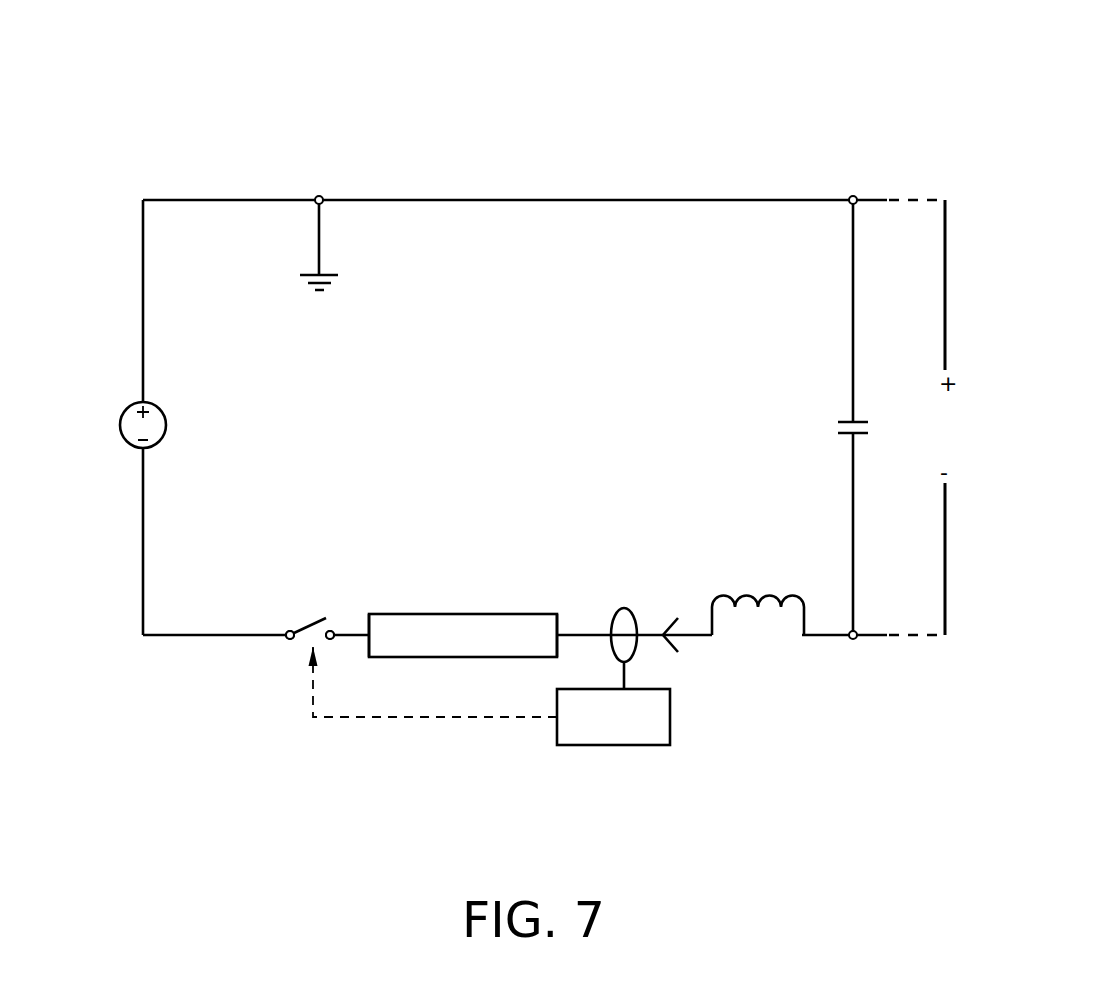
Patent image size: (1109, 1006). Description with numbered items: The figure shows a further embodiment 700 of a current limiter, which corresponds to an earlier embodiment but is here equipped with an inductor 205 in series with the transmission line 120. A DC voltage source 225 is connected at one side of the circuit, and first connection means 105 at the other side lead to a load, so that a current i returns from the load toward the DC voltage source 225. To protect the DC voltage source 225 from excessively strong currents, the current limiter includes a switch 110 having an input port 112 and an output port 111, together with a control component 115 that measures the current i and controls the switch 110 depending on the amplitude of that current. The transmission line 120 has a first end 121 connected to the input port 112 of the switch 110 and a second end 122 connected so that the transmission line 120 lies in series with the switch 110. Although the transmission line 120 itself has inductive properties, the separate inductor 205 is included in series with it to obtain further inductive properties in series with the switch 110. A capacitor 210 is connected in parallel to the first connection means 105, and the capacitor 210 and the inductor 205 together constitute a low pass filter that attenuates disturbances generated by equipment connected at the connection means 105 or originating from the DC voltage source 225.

The current limiter embodiment 700 is at (623, 77).
The DC voltage source 225 is at (164, 398).
The switch 110 is at (279, 617).
The output port 111 is at (290, 640).
The input port 112 is at (330, 640).
The transmission line 120 is at (455, 607).
The first end 121 is at (361, 612).
The second end 122 is at (569, 617).
The control component 115 is at (684, 719).
The inductor 205 is at (766, 649).
The capacitor 210 is at (817, 419).
The first connection means 105 is at (930, 419).